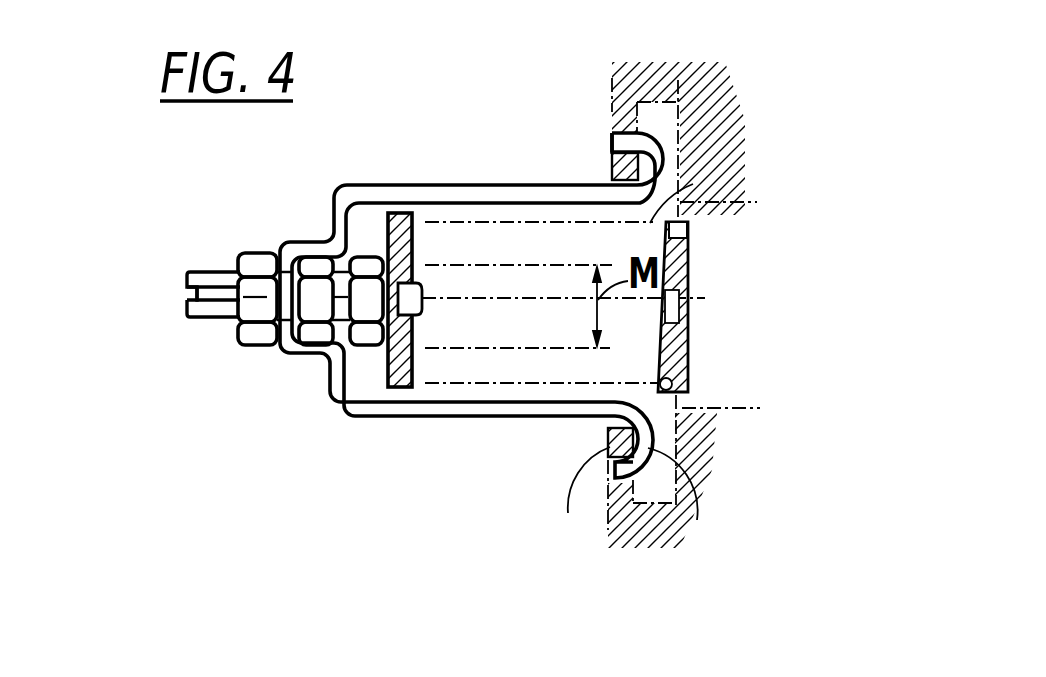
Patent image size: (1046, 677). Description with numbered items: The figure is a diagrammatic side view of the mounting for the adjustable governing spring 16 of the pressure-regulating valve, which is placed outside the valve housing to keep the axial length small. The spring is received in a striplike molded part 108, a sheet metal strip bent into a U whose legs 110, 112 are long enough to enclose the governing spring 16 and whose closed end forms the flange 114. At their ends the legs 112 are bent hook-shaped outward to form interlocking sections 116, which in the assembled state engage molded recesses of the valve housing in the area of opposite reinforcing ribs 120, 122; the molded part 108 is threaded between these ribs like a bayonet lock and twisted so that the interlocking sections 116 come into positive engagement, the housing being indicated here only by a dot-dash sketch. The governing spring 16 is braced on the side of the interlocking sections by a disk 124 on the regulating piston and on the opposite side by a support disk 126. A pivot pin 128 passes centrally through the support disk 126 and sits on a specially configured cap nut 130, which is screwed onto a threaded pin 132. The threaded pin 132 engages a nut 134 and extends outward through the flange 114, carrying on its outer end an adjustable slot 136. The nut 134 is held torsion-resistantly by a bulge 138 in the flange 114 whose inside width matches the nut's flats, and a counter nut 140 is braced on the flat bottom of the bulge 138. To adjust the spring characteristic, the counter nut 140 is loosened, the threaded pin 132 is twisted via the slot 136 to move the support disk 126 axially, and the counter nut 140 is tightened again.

The adjustable governing spring 16 is at (693, 185).
The striplike molded part 108 is at (442, 306).
The leg 110 is at (517, 197).
The leg 112 is at (513, 407).
The flange 114 is at (333, 223).
The interlocking sections 116 is at (668, 148).
The reinforcing rib 120 is at (608, 165).
The reinforcing rib 122 is at (568, 513).
The disk 124 is at (690, 234).
The support disk 126 is at (425, 341).
The pivot pin 128 is at (415, 298).
The cap nut 130 is at (370, 345).
The threaded pin 132 is at (222, 320).
The nut 134 is at (308, 347).
The adjustable slot 136 is at (187, 297).
The bulge 138 is at (272, 233).
The counter nut 140 is at (255, 345).